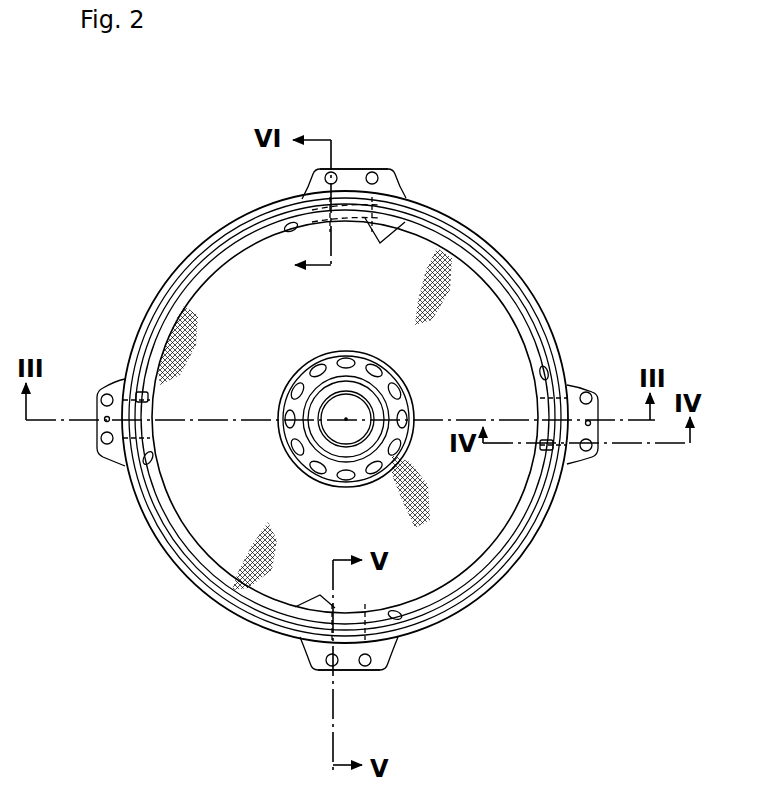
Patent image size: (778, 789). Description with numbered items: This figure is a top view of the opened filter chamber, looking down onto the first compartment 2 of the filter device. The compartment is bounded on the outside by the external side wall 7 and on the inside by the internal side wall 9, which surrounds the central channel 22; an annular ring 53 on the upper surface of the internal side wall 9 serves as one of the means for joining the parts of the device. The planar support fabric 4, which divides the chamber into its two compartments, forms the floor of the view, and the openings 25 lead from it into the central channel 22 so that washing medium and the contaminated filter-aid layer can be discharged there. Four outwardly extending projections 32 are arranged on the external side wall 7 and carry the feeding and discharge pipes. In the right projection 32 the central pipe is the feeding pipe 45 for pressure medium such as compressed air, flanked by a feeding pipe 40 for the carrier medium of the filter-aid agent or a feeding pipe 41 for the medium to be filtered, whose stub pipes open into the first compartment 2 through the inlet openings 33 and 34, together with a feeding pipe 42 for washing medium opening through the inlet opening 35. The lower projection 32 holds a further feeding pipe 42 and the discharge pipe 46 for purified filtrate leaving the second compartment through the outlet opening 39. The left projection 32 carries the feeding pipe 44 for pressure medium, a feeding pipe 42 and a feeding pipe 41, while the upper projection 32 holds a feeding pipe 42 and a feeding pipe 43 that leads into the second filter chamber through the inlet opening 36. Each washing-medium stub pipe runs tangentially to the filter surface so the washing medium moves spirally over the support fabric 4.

The first compartment 2 is at (478, 355).
The support fabric 4 is at (453, 297).
The external side wall 7 is at (533, 548).
The internal side wall 9 is at (338, 410).
The central channel 22 is at (307, 372).
The openings 25 is at (405, 384).
The projections 32 is at (355, 178).
The inlet opening 33 is at (552, 450).
The inlet opening 34 is at (141, 393).
The inlet opening 35 is at (289, 225).
The inlet opening 36 is at (392, 232).
The outlet opening 39 is at (305, 610).
The feeding pipe 40 is at (590, 450).
The feeding pipe 41 is at (104, 396).
The feeding pipe 42 is at (334, 176).
The feeding pipe 43 is at (370, 184).
The feeding pipe 44 is at (105, 420).
The feeding pipe 45 is at (590, 424).
The discharge pipe 46 is at (328, 668).
The annular ring 53 is at (412, 505).